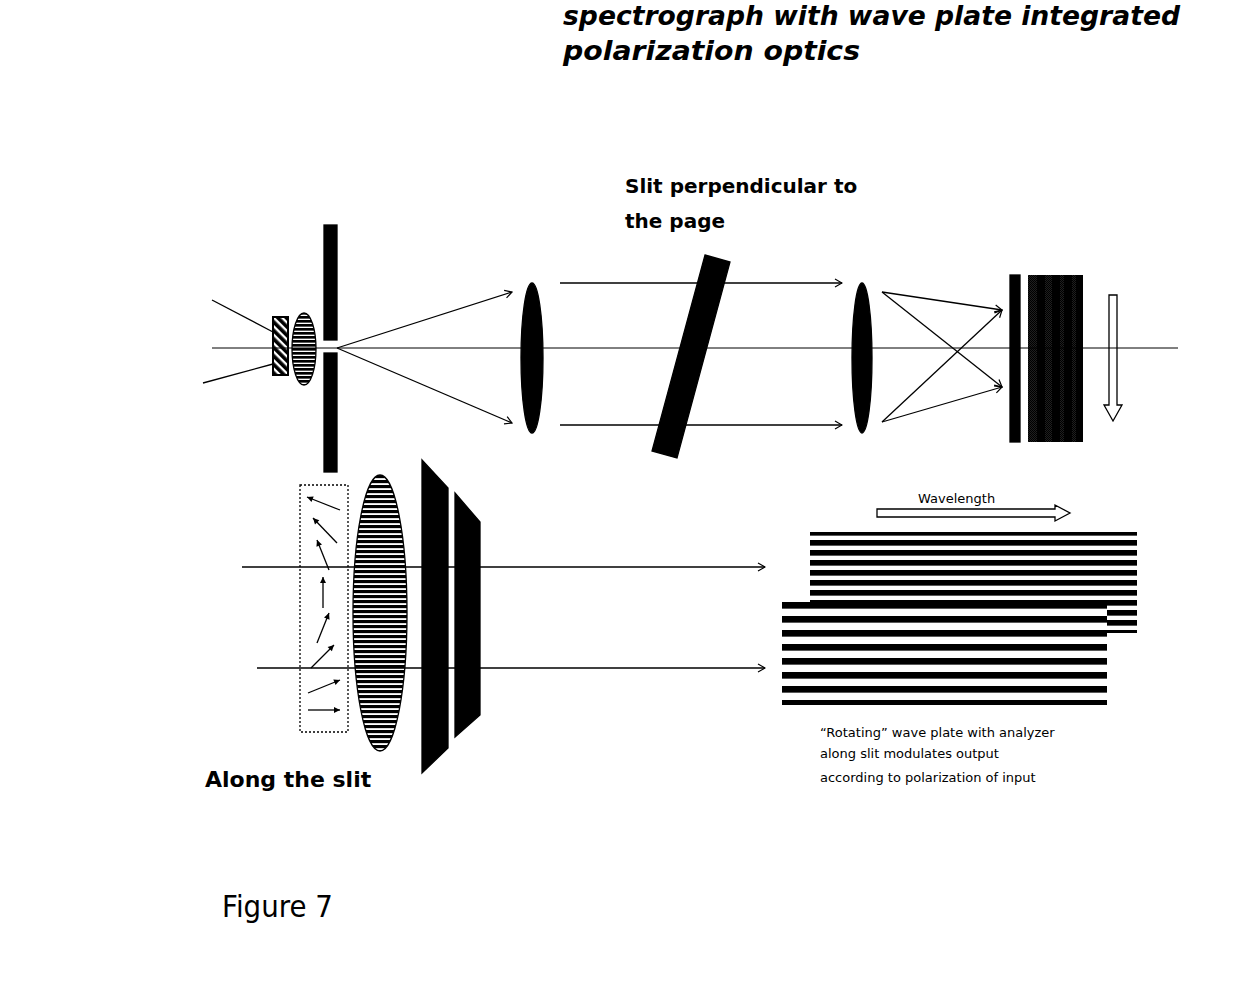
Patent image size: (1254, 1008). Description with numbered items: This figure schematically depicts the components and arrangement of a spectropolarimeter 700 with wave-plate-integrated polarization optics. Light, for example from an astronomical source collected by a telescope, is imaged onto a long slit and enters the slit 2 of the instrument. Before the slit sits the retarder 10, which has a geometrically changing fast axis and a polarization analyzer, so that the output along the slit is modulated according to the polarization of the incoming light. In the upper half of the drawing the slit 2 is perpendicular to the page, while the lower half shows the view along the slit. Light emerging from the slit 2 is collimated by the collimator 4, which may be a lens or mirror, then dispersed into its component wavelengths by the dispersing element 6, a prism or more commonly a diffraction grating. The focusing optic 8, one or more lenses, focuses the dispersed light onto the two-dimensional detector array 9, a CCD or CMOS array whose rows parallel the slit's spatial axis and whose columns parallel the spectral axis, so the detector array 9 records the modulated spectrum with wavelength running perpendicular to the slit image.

The spectropolarimeter 700 is at (437, 118).
The retarder 10 is at (305, 467).
The slit 2 is at (454, 450).
The collimator 4 is at (674, 343).
The dispersing element 6 is at (699, 355).
The focusing optic 8 is at (927, 343).
The two-dimensional detector array 9 is at (1088, 328).